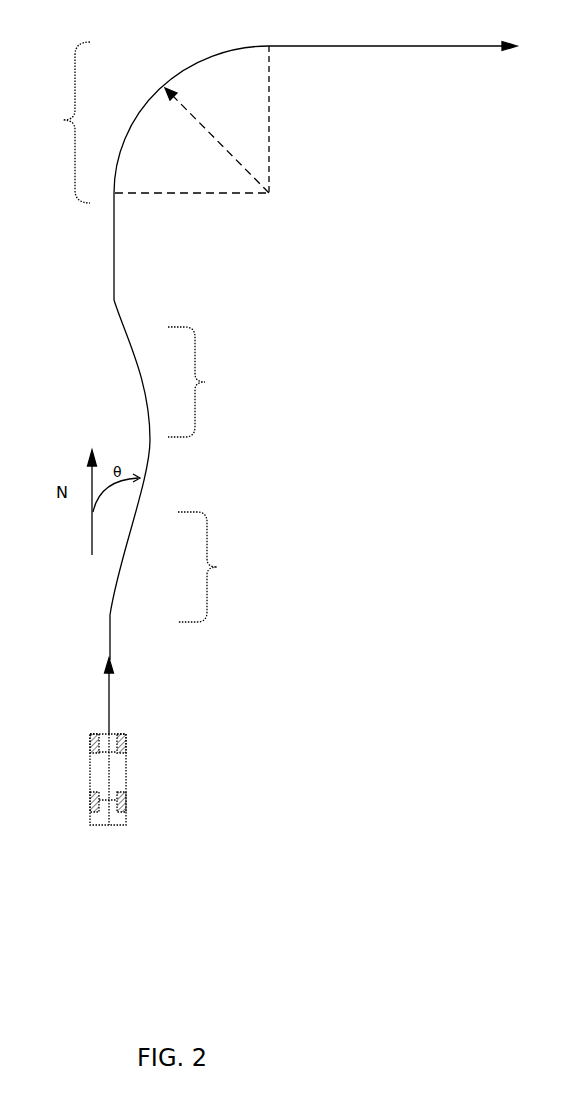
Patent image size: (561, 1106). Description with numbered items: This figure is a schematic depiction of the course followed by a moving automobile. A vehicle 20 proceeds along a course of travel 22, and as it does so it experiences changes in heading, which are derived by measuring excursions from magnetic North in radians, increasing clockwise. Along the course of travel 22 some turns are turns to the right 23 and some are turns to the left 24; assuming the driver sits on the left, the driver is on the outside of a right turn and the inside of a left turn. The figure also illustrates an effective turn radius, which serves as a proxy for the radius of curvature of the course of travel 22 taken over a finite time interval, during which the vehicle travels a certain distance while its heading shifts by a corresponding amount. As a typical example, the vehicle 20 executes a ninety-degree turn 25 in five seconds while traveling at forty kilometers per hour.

The vehicle 20 is at (73, 779).
The course of travel 22 is at (150, 696).
The turn to the right 23 is at (179, 550).
The turn to the left 24 is at (174, 370).
The ninety-degree turn 25 is at (272, 171).